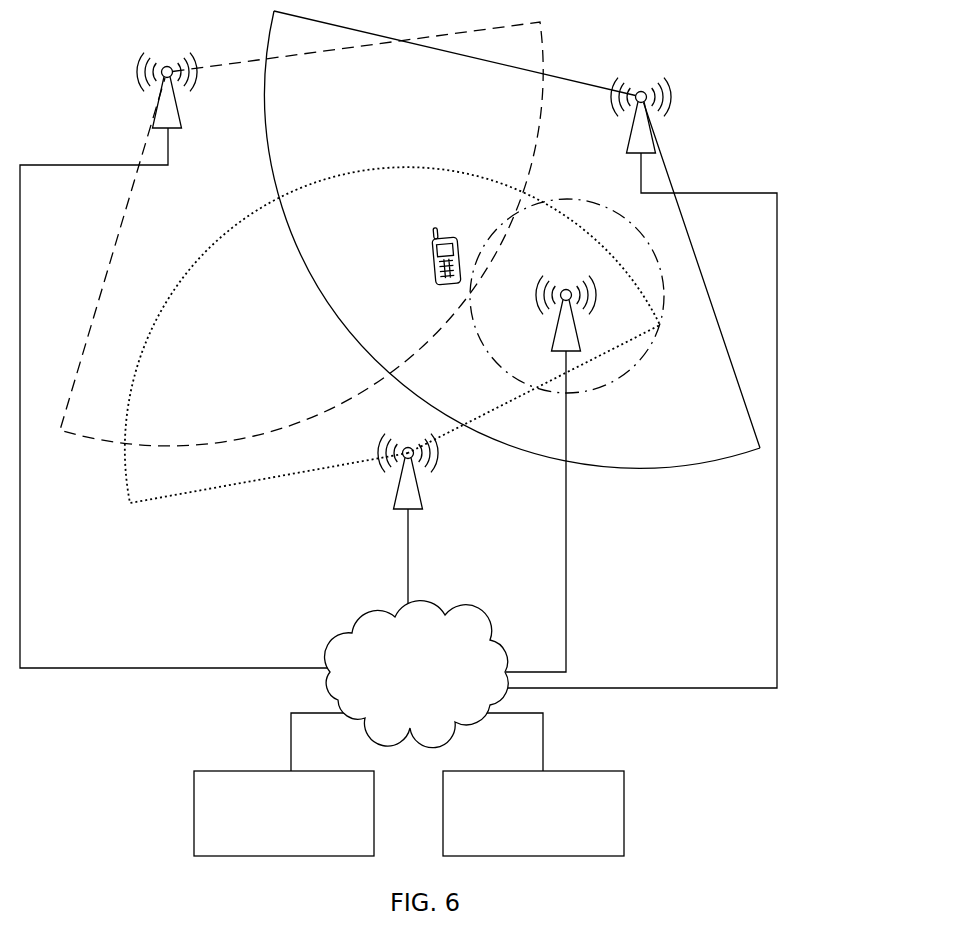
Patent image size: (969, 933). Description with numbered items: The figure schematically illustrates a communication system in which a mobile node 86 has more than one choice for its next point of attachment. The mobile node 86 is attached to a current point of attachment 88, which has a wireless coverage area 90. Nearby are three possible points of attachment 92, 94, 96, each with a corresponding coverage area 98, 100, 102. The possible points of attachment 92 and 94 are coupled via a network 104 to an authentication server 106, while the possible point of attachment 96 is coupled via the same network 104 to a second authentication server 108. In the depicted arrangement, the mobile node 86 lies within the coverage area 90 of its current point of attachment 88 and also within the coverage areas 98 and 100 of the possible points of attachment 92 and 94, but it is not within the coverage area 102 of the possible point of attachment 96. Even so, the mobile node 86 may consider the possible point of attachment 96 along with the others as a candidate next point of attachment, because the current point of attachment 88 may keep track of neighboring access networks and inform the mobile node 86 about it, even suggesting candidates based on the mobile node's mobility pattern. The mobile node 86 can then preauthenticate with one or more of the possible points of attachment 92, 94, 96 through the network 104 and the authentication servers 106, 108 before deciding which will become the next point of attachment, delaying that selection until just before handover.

The mobile node 86 is at (456, 285).
The current point of attachment (CPoA) 88 is at (172, 120).
The wireless coverage area 90 is at (88, 337).
The possible point of attachment (PPoA) 92 is at (640, 133).
The possible point of attachment (PPoA) 94 is at (408, 492).
The possible point of attachment (PPoA) 96 is at (567, 338).
The coverage area 98 is at (640, 470).
The coverage area 100 is at (270, 478).
The coverage area 102 is at (565, 200).
The network 104 is at (478, 642).
The authentication server 106 is at (250, 770).
The authentication server 108 is at (568, 770).